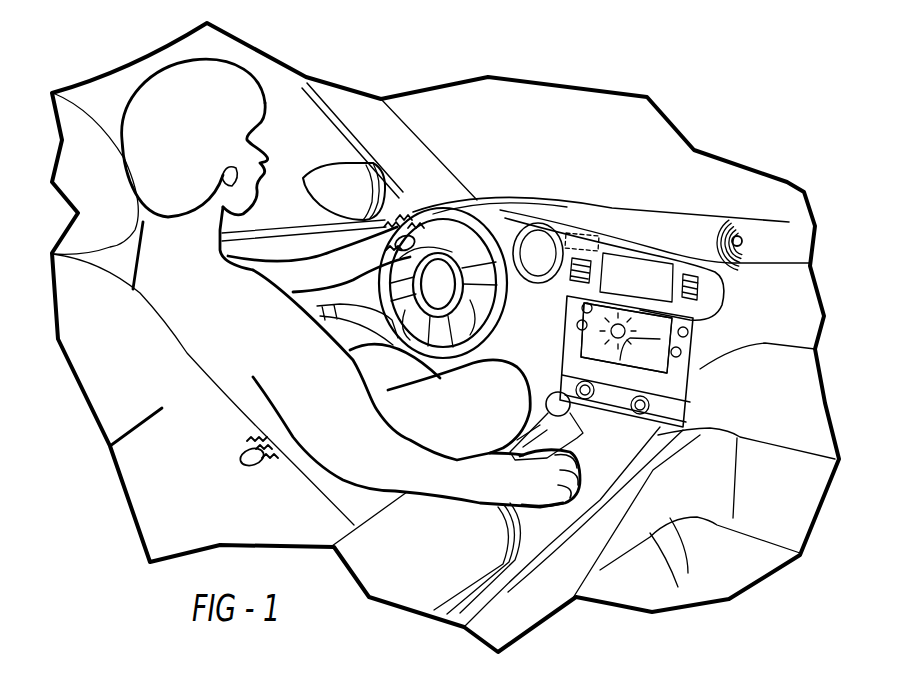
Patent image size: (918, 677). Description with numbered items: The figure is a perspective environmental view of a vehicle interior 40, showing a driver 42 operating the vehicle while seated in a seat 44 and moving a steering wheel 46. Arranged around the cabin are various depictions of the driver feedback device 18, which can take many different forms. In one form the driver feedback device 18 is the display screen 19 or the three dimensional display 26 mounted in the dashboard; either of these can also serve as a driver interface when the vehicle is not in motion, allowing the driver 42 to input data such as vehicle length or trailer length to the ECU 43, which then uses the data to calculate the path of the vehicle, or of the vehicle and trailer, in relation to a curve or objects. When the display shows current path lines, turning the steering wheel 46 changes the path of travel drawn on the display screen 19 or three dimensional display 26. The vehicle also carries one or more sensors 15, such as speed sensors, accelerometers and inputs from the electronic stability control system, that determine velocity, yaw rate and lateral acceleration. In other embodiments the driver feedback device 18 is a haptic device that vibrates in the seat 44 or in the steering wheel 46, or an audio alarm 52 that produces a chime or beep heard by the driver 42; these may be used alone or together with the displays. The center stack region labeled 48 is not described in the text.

The vehicle interior 40 is at (493, 45).
The driver 42 is at (155, 226).
The seat 44 is at (110, 452).
The steering wheel 46 is at (444, 210).
The driver feedback device 18 is at (397, 215).
The sensors 15 is at (542, 257).
The ECU 43 is at (590, 232).
The center stack 48 is at (788, 240).
The audio alarm 52 is at (740, 246).
The display screen 19 is at (665, 359).
The three dimensional display 26 is at (626, 338).